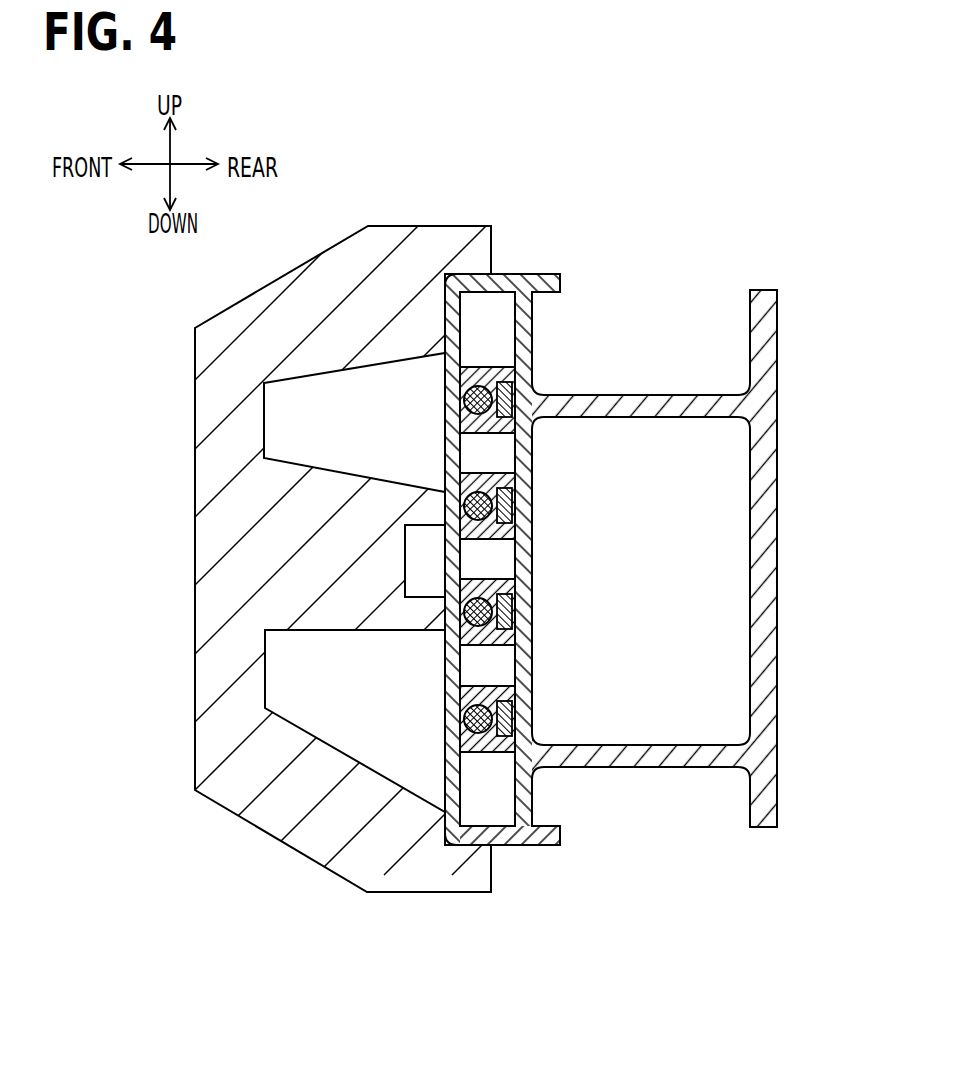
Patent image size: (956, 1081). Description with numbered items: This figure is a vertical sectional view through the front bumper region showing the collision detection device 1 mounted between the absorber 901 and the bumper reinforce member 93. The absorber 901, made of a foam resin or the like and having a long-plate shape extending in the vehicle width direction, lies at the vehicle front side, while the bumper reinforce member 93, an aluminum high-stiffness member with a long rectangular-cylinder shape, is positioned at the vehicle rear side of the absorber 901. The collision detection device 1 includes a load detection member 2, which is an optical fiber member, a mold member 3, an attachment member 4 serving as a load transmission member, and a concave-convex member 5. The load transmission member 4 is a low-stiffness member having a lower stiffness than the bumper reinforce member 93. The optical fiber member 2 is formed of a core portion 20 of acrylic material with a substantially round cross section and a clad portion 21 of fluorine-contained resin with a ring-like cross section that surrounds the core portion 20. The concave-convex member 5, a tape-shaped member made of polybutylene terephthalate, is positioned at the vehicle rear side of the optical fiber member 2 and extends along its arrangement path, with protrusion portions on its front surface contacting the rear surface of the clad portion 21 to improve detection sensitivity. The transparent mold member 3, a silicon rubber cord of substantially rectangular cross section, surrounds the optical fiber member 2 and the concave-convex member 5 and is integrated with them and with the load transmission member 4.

The collision detection device 1 is at (574, 503).
The load detection member 2 is at (489, 532).
The core portion 20 is at (484, 382).
The clad portion 21 is at (478, 386).
The mold member 3 is at (468, 424).
The attachment member 4 is at (500, 275).
The concave-convex member 5 is at (502, 418).
The bumper reinforce member 93 is at (640, 403).
The absorber 901 is at (422, 250).